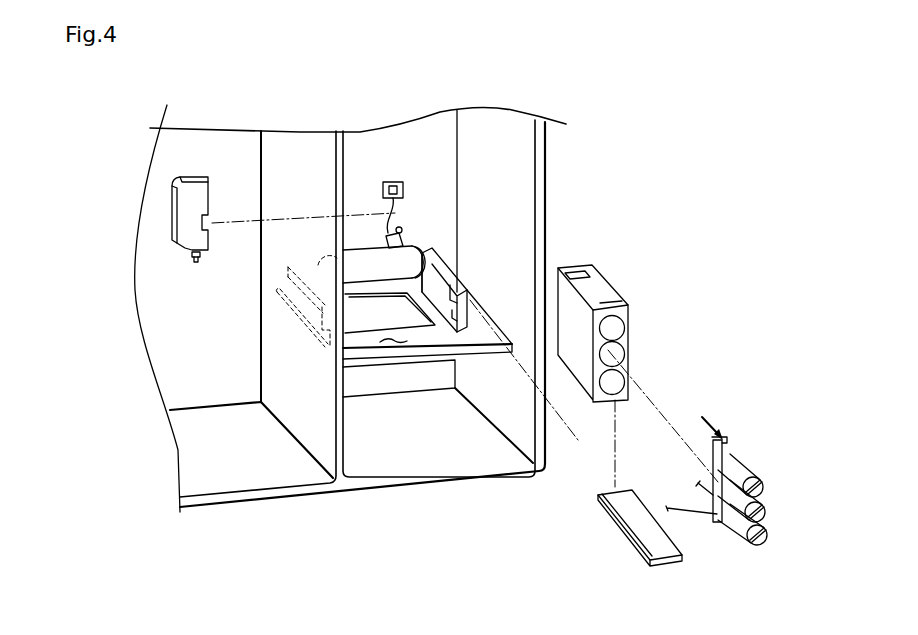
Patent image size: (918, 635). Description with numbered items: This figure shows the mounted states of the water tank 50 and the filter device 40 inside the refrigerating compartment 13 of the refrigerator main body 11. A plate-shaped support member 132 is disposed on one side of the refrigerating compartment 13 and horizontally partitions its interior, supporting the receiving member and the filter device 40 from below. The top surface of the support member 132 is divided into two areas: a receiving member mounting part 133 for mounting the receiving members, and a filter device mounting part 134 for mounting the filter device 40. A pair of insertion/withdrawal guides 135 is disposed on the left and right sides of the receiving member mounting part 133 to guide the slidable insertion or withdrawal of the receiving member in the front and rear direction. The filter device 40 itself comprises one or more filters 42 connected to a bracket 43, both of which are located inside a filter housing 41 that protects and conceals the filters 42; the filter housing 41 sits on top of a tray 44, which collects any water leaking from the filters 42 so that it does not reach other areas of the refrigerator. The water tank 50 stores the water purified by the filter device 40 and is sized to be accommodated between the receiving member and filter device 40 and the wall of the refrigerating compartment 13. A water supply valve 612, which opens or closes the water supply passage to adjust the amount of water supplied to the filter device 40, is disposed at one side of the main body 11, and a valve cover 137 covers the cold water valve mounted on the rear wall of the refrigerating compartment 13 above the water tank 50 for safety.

The main body 11 is at (567, 163).
The refrigerating compartment 13 is at (421, 166).
The filter device 40 is at (763, 290).
The filter housing 41 is at (597, 290).
The filters 42 is at (764, 480).
The bracket 43 is at (712, 407).
The tray 44 is at (631, 488).
The water tank 50 is at (346, 271).
The support member 132 is at (430, 353).
The receiving member mounting part 133 is at (397, 343).
The filter device mounting part 134 is at (477, 327).
The insertion/withdrawal guides 135 is at (310, 310).
The valve cover 137 is at (185, 196).
The water supply valve 612 is at (402, 228).